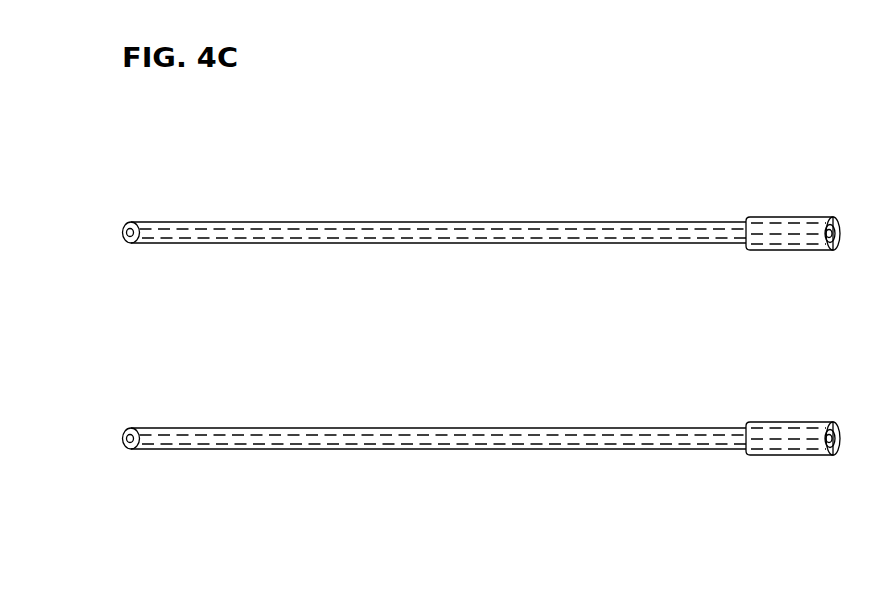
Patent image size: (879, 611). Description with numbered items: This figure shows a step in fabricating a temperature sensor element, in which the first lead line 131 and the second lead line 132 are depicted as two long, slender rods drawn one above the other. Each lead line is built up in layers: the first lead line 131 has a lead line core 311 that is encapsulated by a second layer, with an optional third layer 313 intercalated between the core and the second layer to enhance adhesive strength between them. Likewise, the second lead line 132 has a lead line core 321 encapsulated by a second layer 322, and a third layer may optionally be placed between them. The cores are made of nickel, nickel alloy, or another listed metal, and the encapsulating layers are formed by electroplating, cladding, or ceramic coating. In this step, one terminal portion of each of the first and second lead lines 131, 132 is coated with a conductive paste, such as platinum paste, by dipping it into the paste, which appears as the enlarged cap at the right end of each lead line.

The first lead line 131 is at (435, 170).
The lead line core 311 is at (305, 231).
The third layer 313 is at (348, 222).
The second lead line 132 is at (435, 503).
The lead line core 321 is at (305, 449).
The second layer 322 is at (348, 444).